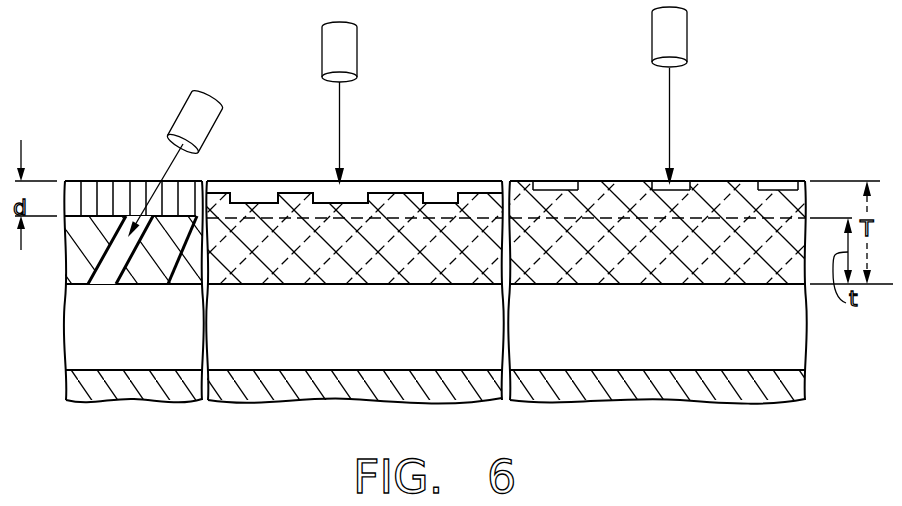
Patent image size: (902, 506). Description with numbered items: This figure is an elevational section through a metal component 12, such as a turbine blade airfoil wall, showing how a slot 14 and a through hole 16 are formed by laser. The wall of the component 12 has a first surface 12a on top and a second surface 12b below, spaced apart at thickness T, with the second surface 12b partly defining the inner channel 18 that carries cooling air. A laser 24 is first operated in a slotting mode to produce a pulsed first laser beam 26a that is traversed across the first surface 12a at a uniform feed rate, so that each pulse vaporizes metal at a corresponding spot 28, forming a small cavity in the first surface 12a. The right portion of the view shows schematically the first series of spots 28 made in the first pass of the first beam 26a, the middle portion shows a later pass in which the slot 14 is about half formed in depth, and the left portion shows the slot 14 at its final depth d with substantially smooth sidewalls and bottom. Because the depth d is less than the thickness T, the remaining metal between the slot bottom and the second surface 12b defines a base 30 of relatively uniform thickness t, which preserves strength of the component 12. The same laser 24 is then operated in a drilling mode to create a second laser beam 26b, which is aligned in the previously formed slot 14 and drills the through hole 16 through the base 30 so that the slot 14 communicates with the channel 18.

The component 12 is at (807, 176).
The first surface 12a is at (722, 181).
The second surface 12b is at (698, 286).
The slot 14 is at (130, 190).
The through hole 16 is at (115, 280).
The channel 18 is at (371, 349).
The laser 24 is at (358, 50).
The first laser beam 26a is at (341, 113).
The second laser beam 26b is at (167, 172).
The spot 28 is at (441, 181).
The base 30 is at (64, 252).